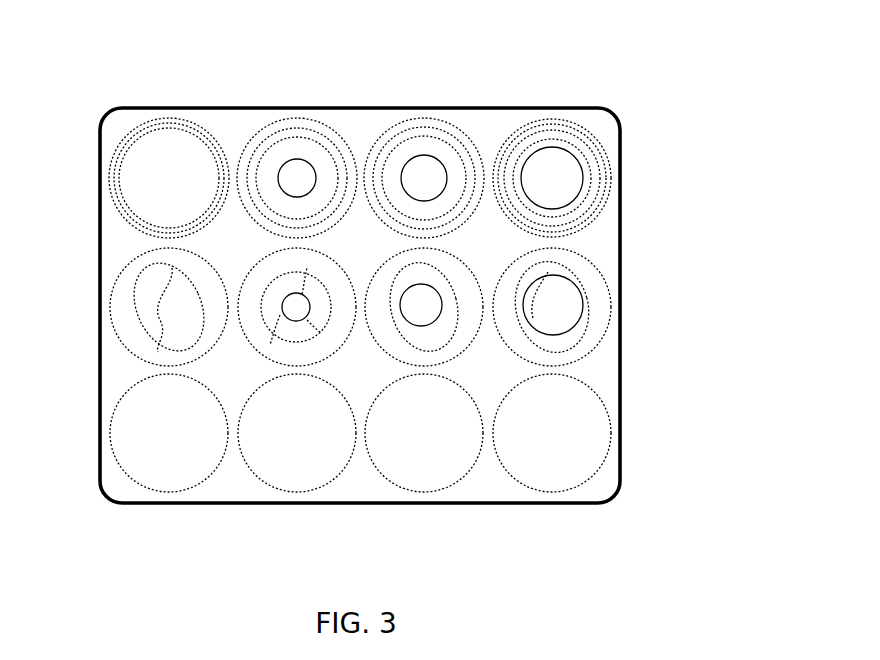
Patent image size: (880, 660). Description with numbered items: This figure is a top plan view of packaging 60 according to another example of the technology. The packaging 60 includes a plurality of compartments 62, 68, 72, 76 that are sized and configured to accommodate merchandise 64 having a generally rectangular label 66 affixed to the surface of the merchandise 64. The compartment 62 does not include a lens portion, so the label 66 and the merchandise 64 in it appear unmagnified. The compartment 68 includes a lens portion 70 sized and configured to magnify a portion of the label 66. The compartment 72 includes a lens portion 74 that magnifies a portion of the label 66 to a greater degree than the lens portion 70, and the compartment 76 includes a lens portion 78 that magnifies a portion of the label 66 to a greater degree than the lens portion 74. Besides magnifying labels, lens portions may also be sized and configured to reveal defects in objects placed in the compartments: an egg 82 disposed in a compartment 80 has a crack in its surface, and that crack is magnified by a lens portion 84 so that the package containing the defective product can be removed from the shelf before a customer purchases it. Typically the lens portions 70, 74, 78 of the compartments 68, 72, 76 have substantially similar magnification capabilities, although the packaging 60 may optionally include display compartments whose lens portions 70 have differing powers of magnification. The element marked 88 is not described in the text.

The packaging 60 is at (718, 276).
The compartment 62 is at (193, 118).
The merchandise 64 is at (330, 126).
The label 66 is at (254, 130).
The compartment 68 is at (302, 158).
The lens portion 70 is at (367, 205).
The compartment 72 is at (437, 121).
The lens portion 74 is at (516, 127).
The compartment 76 is at (553, 121).
The lens portion 78 is at (621, 223).
The compartment 80 is at (248, 334).
The egg 82 is at (272, 346).
The lens portion 84 is at (323, 362).
The spoke 88 is at (320, 281).